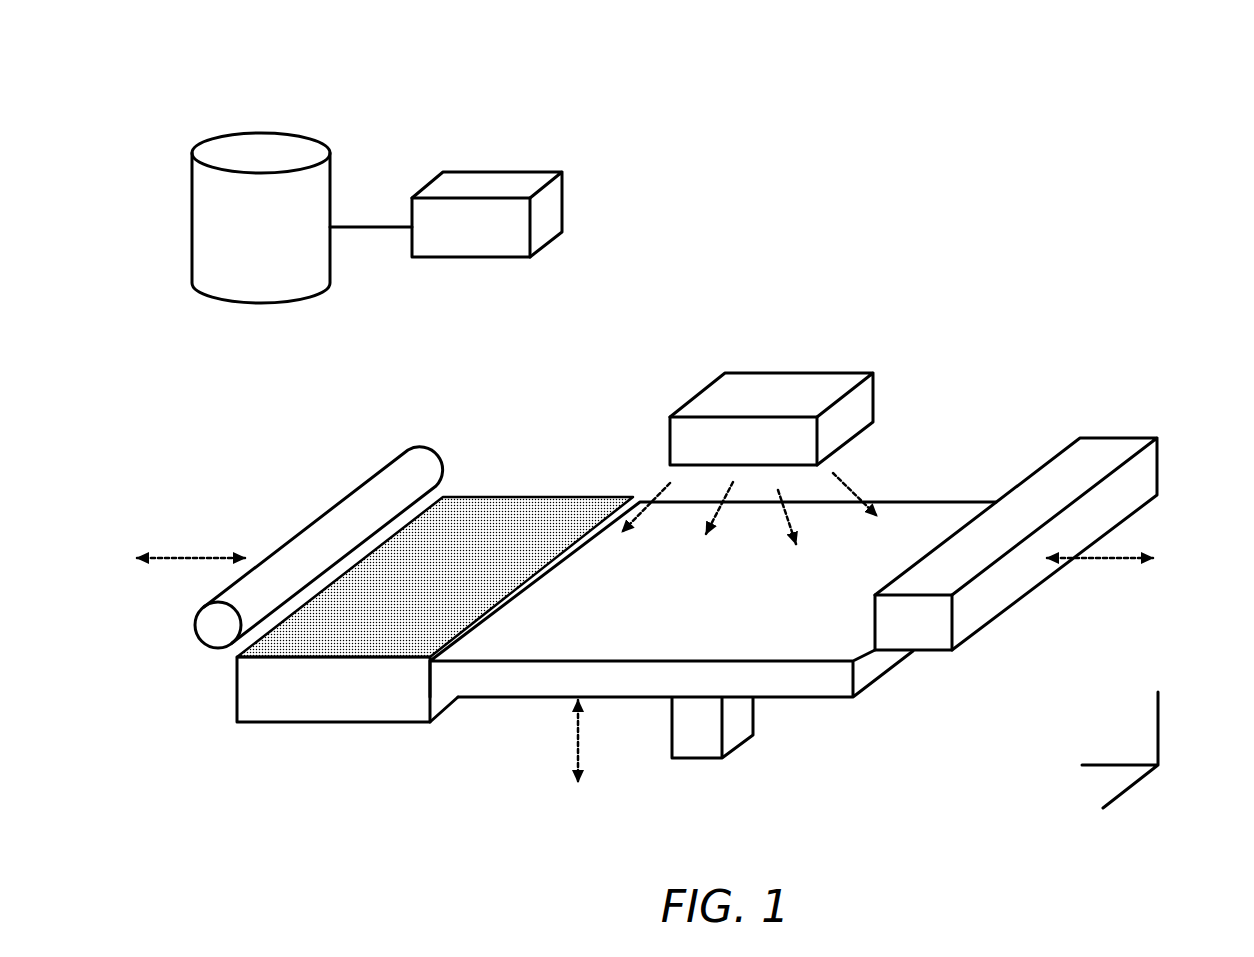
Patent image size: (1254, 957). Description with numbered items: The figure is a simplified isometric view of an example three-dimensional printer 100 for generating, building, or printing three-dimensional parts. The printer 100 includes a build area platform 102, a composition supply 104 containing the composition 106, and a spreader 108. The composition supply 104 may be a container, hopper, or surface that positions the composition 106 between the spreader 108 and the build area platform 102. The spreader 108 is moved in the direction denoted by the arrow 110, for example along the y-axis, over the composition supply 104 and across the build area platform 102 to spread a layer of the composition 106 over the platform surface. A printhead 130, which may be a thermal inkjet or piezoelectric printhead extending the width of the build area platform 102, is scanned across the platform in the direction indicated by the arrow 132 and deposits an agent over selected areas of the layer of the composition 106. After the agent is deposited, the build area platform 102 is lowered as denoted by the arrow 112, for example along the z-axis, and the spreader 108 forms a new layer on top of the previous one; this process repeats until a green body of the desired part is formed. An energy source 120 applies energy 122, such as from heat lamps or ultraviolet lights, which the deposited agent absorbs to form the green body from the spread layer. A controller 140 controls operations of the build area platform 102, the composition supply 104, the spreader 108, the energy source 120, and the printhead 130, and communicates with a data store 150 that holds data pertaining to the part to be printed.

The 3D printer 100 is at (280, 76).
The build area platform 102 is at (813, 703).
The composition supply 104 is at (305, 725).
The composition 106 is at (250, 657).
The spreader 108 is at (293, 533).
The arrow 110 is at (197, 552).
The arrow 112 is at (587, 763).
The energy source 120 is at (783, 373).
The energy 122 is at (660, 495).
The printhead 130 is at (1127, 440).
The arrow 132 is at (1107, 563).
The controller 140 is at (517, 170).
The data store 150 is at (261, 218).